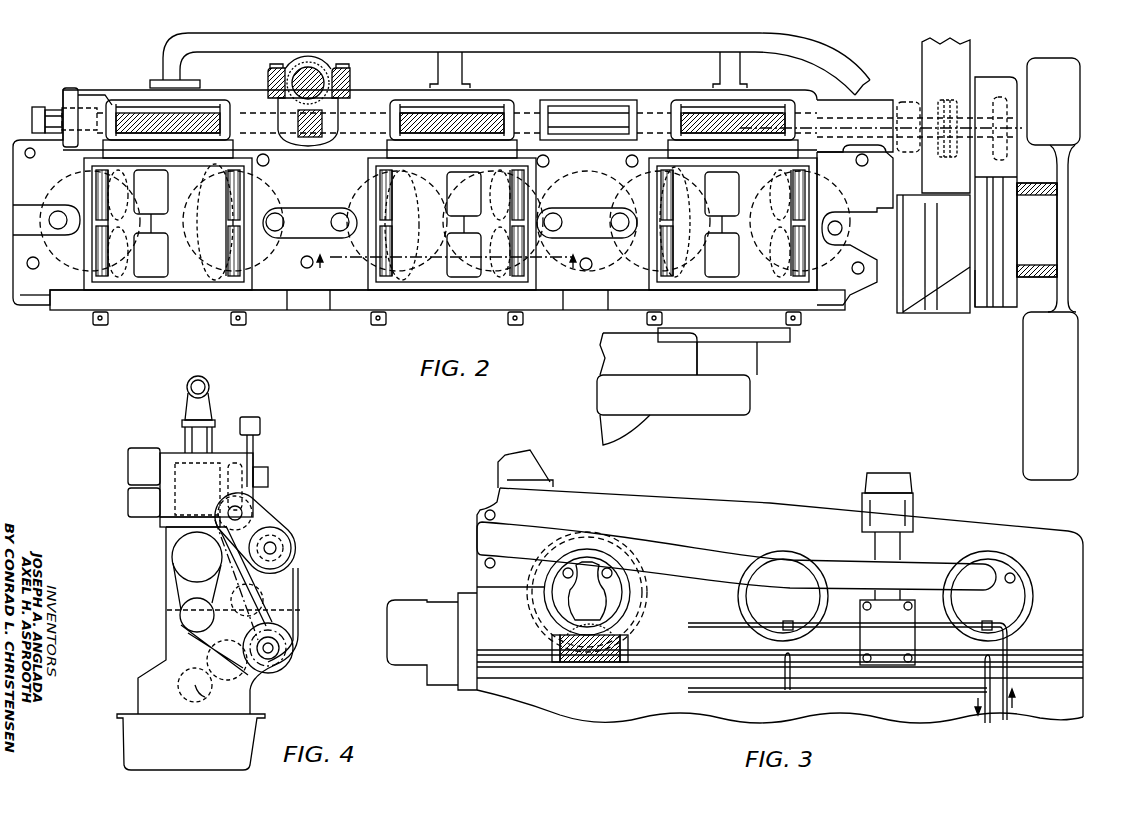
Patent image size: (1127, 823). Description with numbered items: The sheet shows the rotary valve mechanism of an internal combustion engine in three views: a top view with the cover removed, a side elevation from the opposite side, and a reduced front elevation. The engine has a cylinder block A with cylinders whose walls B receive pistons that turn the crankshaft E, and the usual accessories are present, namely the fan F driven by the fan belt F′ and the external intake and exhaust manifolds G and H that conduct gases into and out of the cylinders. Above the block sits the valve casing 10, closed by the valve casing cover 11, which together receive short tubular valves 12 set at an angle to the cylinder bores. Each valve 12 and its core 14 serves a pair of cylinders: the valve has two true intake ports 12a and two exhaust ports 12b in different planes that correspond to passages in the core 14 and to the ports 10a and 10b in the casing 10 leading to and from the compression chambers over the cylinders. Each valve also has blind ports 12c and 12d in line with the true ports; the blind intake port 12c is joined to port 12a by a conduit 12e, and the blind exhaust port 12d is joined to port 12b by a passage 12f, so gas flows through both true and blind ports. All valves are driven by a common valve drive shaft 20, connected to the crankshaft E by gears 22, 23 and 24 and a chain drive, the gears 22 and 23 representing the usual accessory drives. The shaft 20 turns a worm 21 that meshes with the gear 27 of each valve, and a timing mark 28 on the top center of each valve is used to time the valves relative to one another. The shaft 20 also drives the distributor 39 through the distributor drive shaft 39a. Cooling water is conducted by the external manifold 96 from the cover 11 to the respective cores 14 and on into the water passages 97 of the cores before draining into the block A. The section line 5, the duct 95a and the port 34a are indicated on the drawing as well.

In FIG. 2, the valve casing 10 is at (889, 122).
In FIG. 3, the valve casing 10 is at (1073, 630).
In FIG. 2, the port in the valve casing 10a is at (197, 290).
In FIG. 2, the port in the valve casing 10b is at (238, 185).
In FIG. 3, the valve casing cover 11 is at (1042, 533).
In FIG. 2, the tubular valve 12 is at (427, 278).
In FIG. 4, the tubular valve 12 is at (178, 462).
In FIG. 3, the tubular valve 12 is at (603, 537).
In FIG. 2, the intake port 12a is at (400, 273).
In FIG. 2, the exhaust port 12b is at (470, 186).
In FIG. 2, the blind intake port 12c is at (397, 180).
In FIG. 2, the blind exhaust port 12d is at (460, 272).
In FIG. 2, the conduit 12e is at (745, 228).
In FIG. 2, the passage 12f is at (215, 205).
In FIG. 2, the valve core 14 is at (82, 303).
In FIG. 3, the valve core 14 is at (562, 633).
In FIG. 2, the valve drive shaft 20 is at (605, 125).
In FIG. 4, the valve drive shaft 20 is at (237, 515).
In FIG. 3, the valve drive shaft 20 is at (613, 663).
In FIG. 2, the worm 21 is at (740, 112).
In FIG. 3, the worm 21 is at (593, 663).
In FIG. 4, the gear 22 is at (270, 548).
In FIG. 4, the gear 23 is at (268, 648).
In FIG. 4, the gear 24 is at (233, 670).
In FIG. 2, the gear 27 is at (478, 115).
In FIG. 4, the gear 27 is at (243, 456).
In FIG. 3, the gear 27 is at (620, 637).
In FIG. 2, the timing mark 28 is at (165, 226).
In FIG. 3, the conduit 34a is at (747, 693).
In FIG. 3, the distributor 39 is at (903, 500).
In FIG. 2, the distributor drive shaft 39a is at (312, 60).
In FIG. 3, the conduit 95a is at (715, 628).
In FIG. 2, the external manifold 96 is at (532, 48).
In FIG. 3, the external manifold 96 is at (673, 547).
In FIG. 3, the water passages 97 is at (600, 605).
In FIG. 2, the section line 5 is at (448, 254).
In FIG. 4, the cylinder block A is at (167, 547).
In FIG. 3, the cylinder block A is at (1073, 708).
In FIG. 2, the cylinder walls B is at (820, 277).
In FIG. 4, the crankshaft E is at (195, 687).
In FIG. 2, the fan F is at (1033, 412).
In FIG. 2, the fan belt F′ is at (985, 303).
In FIG. 4, the fan belt F′ is at (170, 603).
In FIG. 2, the intake manifold G is at (625, 425).
In FIG. 2, the exhaust manifold H is at (740, 393).